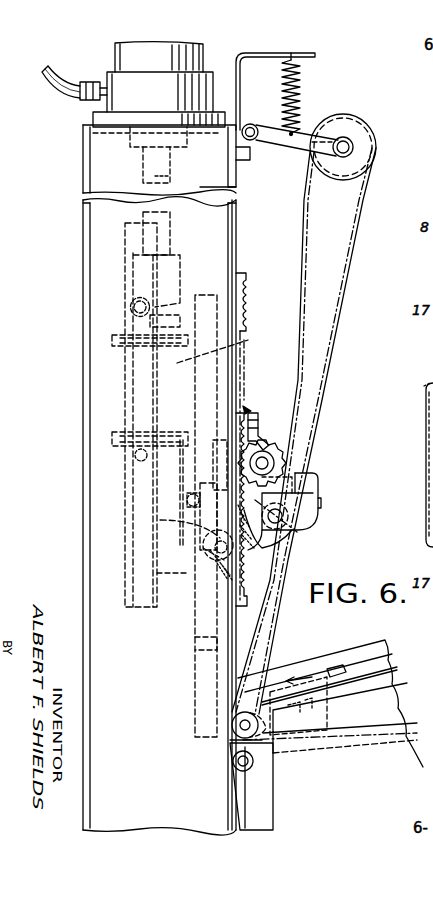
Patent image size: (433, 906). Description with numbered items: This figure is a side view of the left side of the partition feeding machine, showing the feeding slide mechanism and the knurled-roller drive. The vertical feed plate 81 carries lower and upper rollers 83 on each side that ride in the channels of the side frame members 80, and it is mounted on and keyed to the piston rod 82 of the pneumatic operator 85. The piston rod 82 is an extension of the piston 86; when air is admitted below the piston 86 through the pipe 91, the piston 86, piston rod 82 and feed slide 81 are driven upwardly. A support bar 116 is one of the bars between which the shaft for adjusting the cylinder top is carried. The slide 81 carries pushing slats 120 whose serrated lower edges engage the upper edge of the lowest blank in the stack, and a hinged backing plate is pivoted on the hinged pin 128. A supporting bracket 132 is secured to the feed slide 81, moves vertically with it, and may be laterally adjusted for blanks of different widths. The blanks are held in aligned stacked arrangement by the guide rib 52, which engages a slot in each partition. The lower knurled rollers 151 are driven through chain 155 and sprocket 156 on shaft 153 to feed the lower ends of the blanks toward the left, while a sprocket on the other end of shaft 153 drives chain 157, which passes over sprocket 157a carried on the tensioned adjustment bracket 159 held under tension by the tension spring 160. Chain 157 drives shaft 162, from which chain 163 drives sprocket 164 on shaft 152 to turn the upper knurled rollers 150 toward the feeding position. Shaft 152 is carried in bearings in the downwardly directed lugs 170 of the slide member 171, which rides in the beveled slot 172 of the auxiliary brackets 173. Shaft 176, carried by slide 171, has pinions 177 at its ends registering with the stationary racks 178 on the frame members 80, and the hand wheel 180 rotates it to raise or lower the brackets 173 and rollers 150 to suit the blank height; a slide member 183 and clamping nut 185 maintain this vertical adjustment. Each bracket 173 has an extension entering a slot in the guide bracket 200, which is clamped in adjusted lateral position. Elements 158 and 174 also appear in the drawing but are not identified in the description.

The guide rib 52 is at (381, 661).
The side frame member 80 is at (232, 221).
The vertical feed plate 81 is at (136, 296).
The piston rod 82 is at (146, 170).
The rollers 83 is at (138, 314).
The pneumatic operator 85 is at (116, 47).
The piston 86 is at (130, 141).
The pipe 91 is at (44, 79).
The support bar 116 is at (84, 128).
The pushing slats 120 is at (210, 492).
The hinged pin 128 is at (217, 582).
The supporting bracket 132 is at (248, 346).
The upper knurled rollers 150 is at (210, 537).
The knurled rollers 151 is at (238, 748).
The shaft 152 is at (203, 570).
The shaft 153 is at (245, 725).
The chain 155 is at (330, 666).
The sprocket 156 is at (236, 722).
The chain 157 is at (371, 203).
The sprocket 157a is at (364, 141).
The roller 158 is at (292, 524).
The tensioned adjustment bracket 159 is at (257, 125).
The tension spring 160 is at (297, 93).
The shaft 162 is at (278, 520).
The chain 163 is at (242, 545).
The sprocket 164 is at (210, 530).
The downwardly directed lugs 170 is at (213, 478).
The slide member 171 is at (220, 465).
The beveled slot 172 is at (300, 481).
The auxiliary bracket 173 is at (306, 520).
The latch plate 174 is at (306, 494).
The shaft 176 is at (274, 463).
The pinions 177 is at (268, 441).
The stationary rack 178 is at (246, 281).
The hand wheel 180 is at (411, 375).
The slide member 183 is at (247, 406).
The clamping nut 185 is at (255, 420).
The guide bracket 200 is at (200, 626).